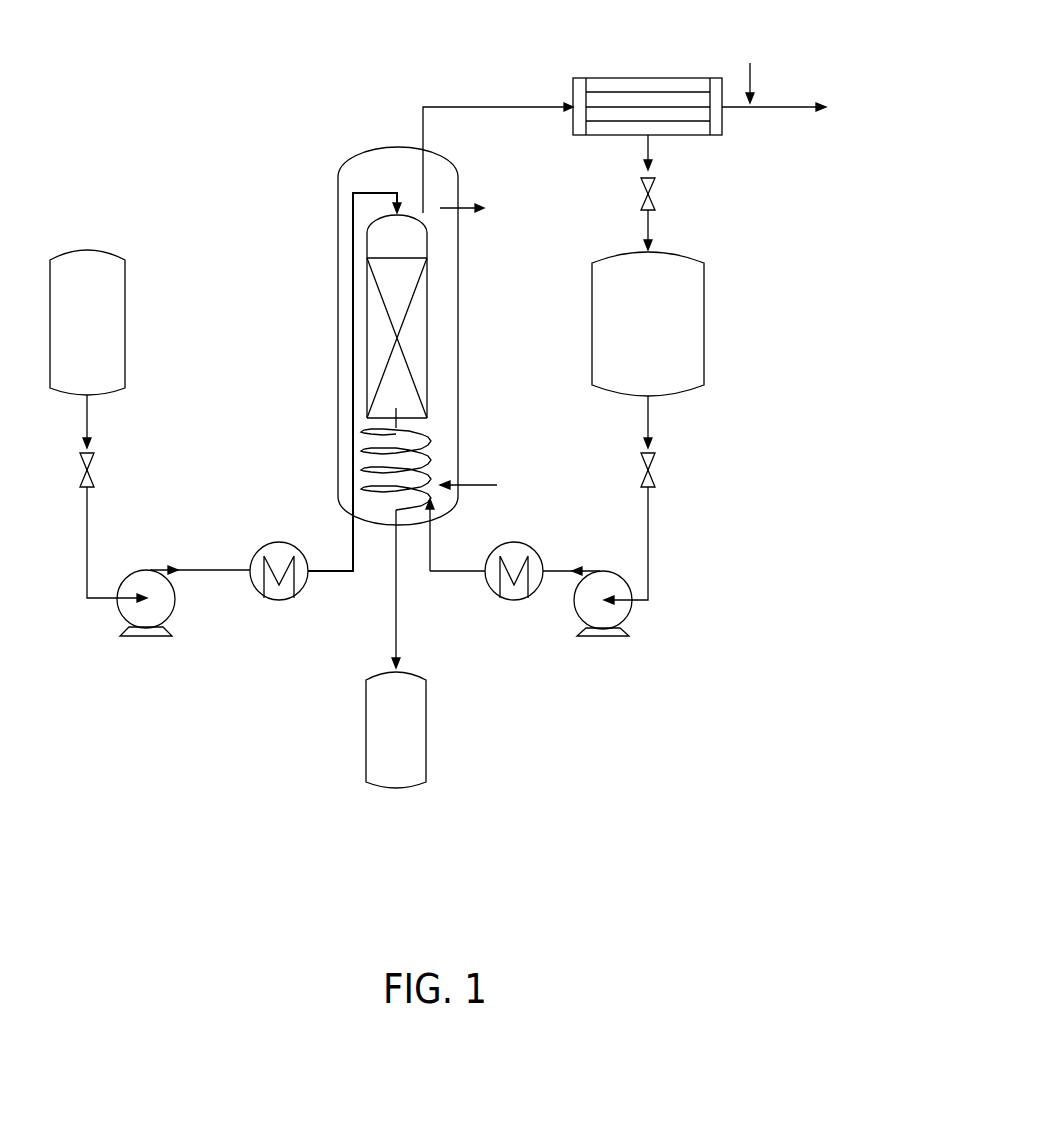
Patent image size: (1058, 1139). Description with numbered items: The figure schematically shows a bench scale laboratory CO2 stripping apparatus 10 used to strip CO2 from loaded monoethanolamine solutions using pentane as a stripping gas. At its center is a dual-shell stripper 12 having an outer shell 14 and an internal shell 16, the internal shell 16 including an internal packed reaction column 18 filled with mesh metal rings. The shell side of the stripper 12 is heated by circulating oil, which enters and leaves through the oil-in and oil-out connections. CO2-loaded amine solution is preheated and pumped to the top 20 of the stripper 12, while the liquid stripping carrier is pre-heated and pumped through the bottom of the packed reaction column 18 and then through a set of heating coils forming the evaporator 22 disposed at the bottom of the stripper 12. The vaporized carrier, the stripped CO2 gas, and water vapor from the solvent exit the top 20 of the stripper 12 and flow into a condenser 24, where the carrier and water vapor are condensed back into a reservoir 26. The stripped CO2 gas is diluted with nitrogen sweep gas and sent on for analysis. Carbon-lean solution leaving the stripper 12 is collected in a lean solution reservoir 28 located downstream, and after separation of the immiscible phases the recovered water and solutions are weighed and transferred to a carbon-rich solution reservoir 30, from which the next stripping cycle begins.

The stripping apparatus 10 is at (259, 82).
The dual-shell stripper 12 is at (334, 159).
The outer shell 14 is at (329, 209).
The internal shell 16 is at (366, 250).
The packed reaction column 18 is at (410, 327).
The top of the stripper 20 is at (408, 212).
The evaporator 22 is at (425, 465).
The condenser 24 is at (614, 77).
The reservoir 26 is at (704, 300).
The lean solution reservoir 28 is at (415, 712).
The carbon-rich solution reservoir 30 is at (110, 308).